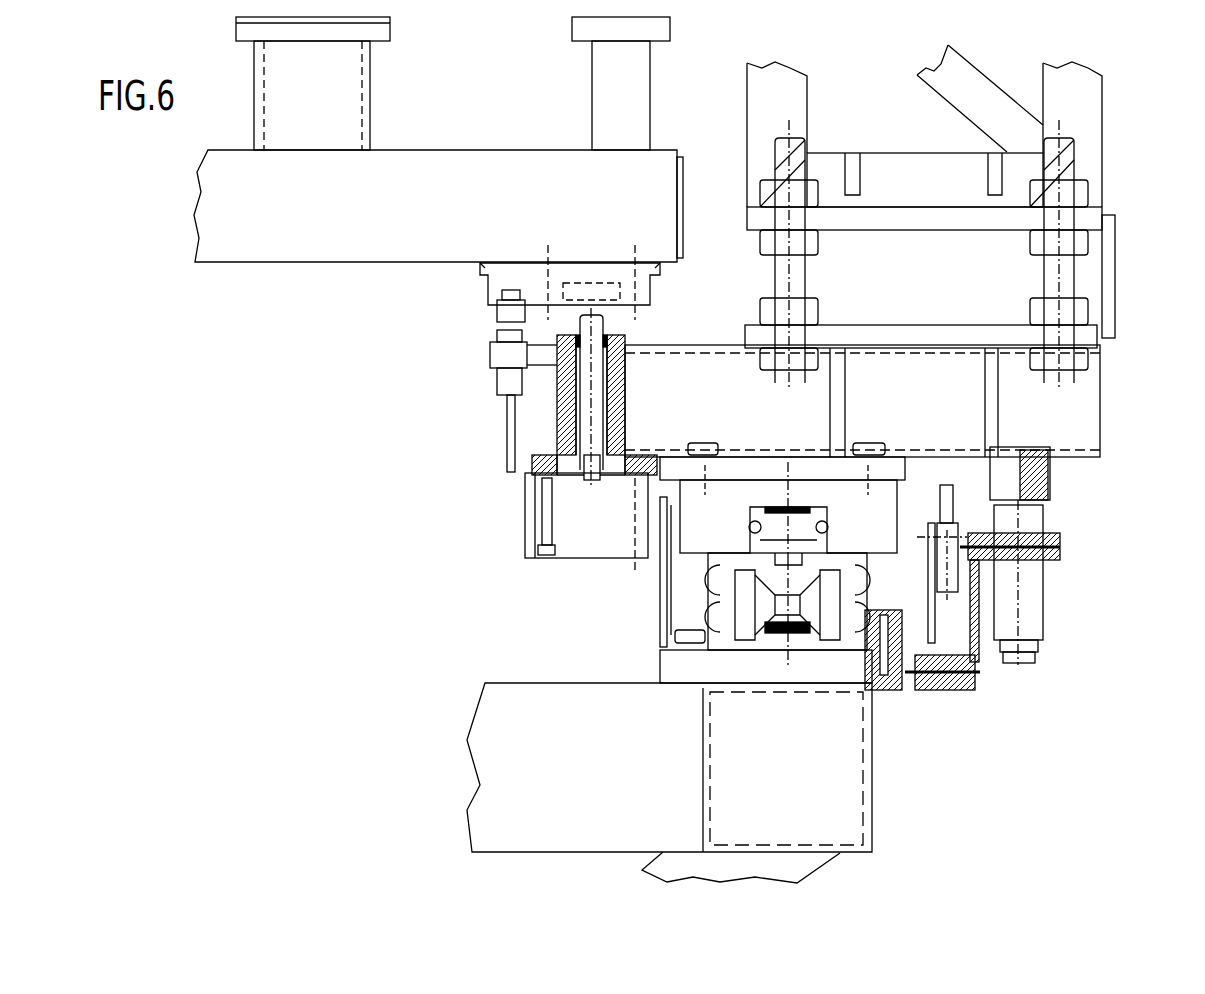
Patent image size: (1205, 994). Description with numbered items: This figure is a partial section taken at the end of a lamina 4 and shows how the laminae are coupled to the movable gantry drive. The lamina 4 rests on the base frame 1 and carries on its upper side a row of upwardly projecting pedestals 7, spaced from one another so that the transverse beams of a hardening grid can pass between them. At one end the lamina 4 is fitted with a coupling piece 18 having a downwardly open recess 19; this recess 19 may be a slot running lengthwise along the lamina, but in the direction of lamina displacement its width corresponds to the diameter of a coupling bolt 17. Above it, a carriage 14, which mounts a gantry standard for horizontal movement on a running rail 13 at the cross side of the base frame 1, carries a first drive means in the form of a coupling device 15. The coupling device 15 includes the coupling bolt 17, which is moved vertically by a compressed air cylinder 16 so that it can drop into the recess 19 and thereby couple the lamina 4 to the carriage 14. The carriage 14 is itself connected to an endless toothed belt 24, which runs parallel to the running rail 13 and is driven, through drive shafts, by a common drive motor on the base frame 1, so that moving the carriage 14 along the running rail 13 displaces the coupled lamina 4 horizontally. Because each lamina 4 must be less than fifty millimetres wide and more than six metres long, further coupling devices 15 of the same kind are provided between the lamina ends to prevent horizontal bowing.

The base frame 1 is at (1093, 124).
The lamina 4 is at (362, 255).
The pedestal 7 is at (343, 90).
The running rail 13 is at (860, 577).
The carriage 14 is at (867, 520).
The coupling device 15 is at (556, 406).
The compressed air cylinder 16 is at (575, 523).
The coupling bolt 17 is at (583, 335).
The coupling piece 18 is at (642, 291).
The recess 19 is at (600, 283).
The endless toothed belt 24 is at (765, 625).